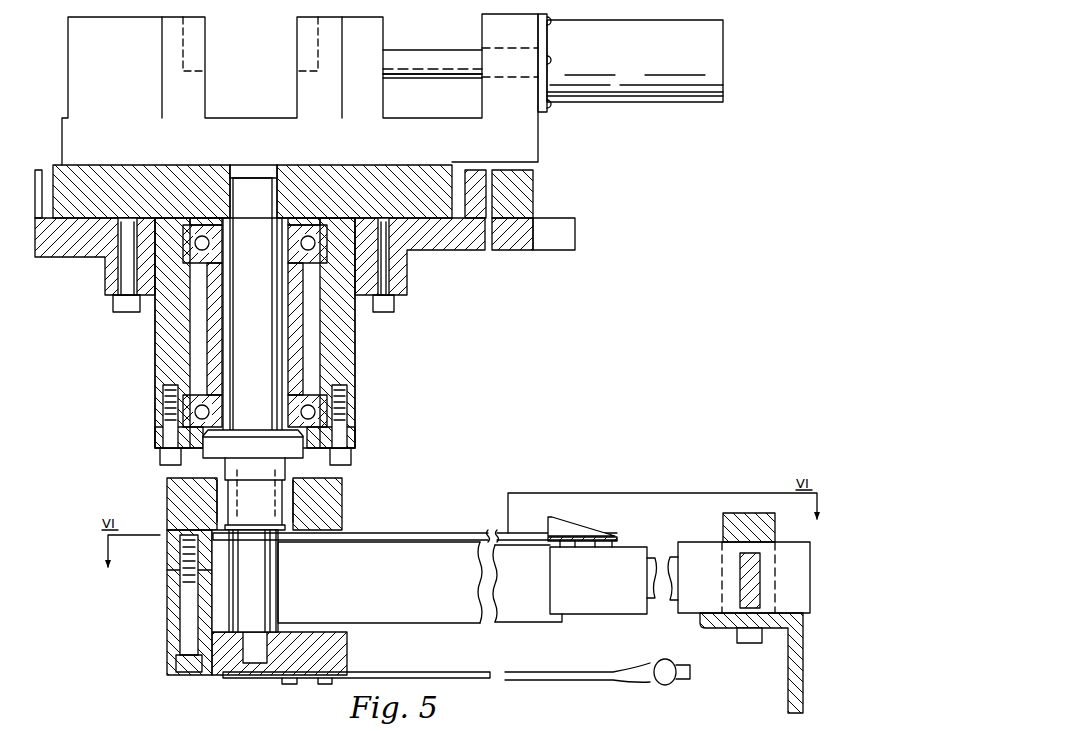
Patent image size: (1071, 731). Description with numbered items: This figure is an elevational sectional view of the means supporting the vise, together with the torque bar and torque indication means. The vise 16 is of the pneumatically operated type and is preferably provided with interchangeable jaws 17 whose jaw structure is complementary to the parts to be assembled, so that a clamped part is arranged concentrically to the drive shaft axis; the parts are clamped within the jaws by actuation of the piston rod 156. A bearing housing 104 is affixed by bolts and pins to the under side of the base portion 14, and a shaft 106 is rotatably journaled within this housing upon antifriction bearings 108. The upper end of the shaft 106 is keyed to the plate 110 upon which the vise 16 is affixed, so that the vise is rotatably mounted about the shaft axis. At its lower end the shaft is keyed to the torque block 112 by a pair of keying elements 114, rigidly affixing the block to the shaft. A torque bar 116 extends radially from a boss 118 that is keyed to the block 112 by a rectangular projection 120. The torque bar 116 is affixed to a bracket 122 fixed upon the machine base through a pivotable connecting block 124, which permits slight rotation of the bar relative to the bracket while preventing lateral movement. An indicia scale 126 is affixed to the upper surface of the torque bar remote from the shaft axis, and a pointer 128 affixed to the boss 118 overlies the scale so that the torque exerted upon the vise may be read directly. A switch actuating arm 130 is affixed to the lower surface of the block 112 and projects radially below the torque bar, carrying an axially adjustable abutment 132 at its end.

The base portion 14 is at (475, 172).
The vise 16 is at (391, 39).
The interchangeable jaws 17 is at (303, 78).
The bearing housing 104 is at (355, 335).
The shaft 106 is at (264, 353).
The antifriction bearings 108 is at (219, 257).
The plate 110 is at (413, 170).
The torque block 112 is at (172, 588).
The keying elements 114 is at (225, 483).
The torque bar 116 is at (425, 615).
The boss 118 is at (262, 592).
The rectangular projection 120 is at (250, 657).
The bracket 122 is at (790, 673).
The pivotable connecting block 124 is at (765, 531).
The indicia scale 126 is at (612, 535).
The pointer 128 is at (518, 533).
The switch actuating arm 130 is at (540, 679).
The axially adjustable abutment 132 is at (668, 685).
The piston rod 156 is at (430, 76).